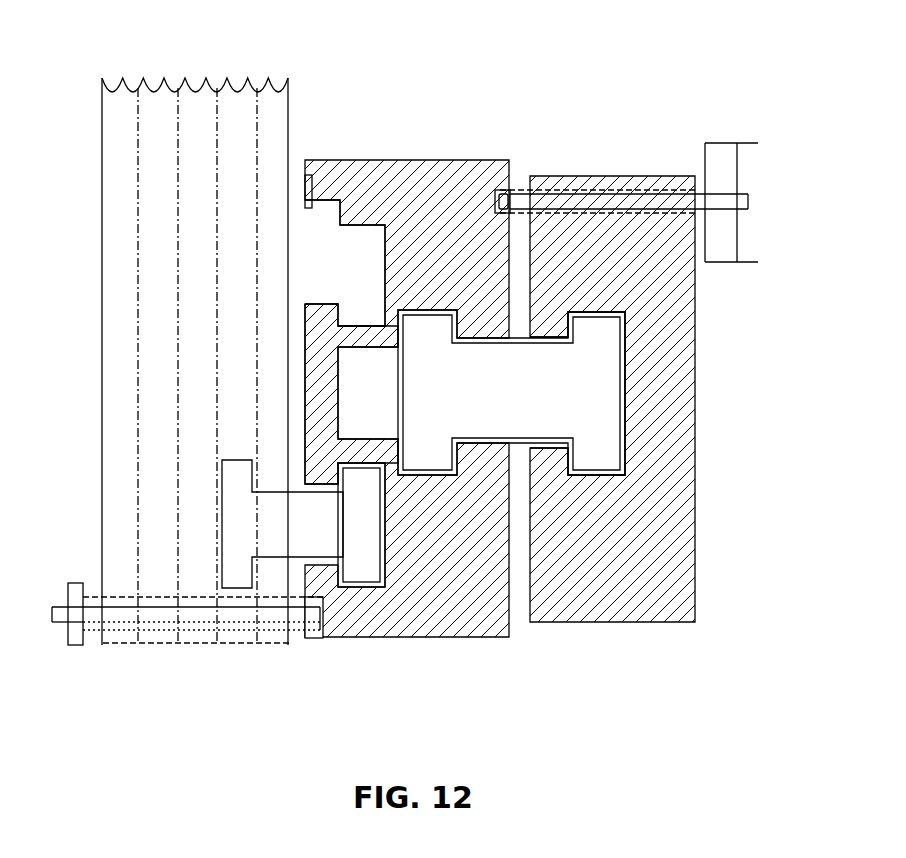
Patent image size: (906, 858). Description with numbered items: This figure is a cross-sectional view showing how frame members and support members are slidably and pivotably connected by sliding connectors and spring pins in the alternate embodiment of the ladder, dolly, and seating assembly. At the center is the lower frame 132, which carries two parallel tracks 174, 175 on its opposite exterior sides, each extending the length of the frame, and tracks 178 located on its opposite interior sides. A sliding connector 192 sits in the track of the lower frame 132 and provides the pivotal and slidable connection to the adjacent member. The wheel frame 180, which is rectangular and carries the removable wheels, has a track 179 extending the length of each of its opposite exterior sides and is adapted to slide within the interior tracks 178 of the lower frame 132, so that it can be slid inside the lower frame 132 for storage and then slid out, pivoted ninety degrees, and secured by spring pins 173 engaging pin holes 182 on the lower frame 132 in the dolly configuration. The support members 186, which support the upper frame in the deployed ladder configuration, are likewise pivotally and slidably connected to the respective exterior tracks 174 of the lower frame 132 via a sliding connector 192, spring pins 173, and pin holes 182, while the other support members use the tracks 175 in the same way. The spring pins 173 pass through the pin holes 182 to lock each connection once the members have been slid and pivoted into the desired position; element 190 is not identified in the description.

The lower frame 132 is at (474, 178).
The spring pins 173 is at (718, 253).
The track 174 is at (380, 590).
The track 175 is at (386, 222).
The tracks 178 is at (350, 412).
The track 179 is at (622, 446).
The wheel frame 180 is at (685, 587).
The pin holes 182 is at (315, 190).
The support members 186 is at (110, 273).
The T-nut 190 is at (303, 550).
The sliding connector 192 is at (572, 390).